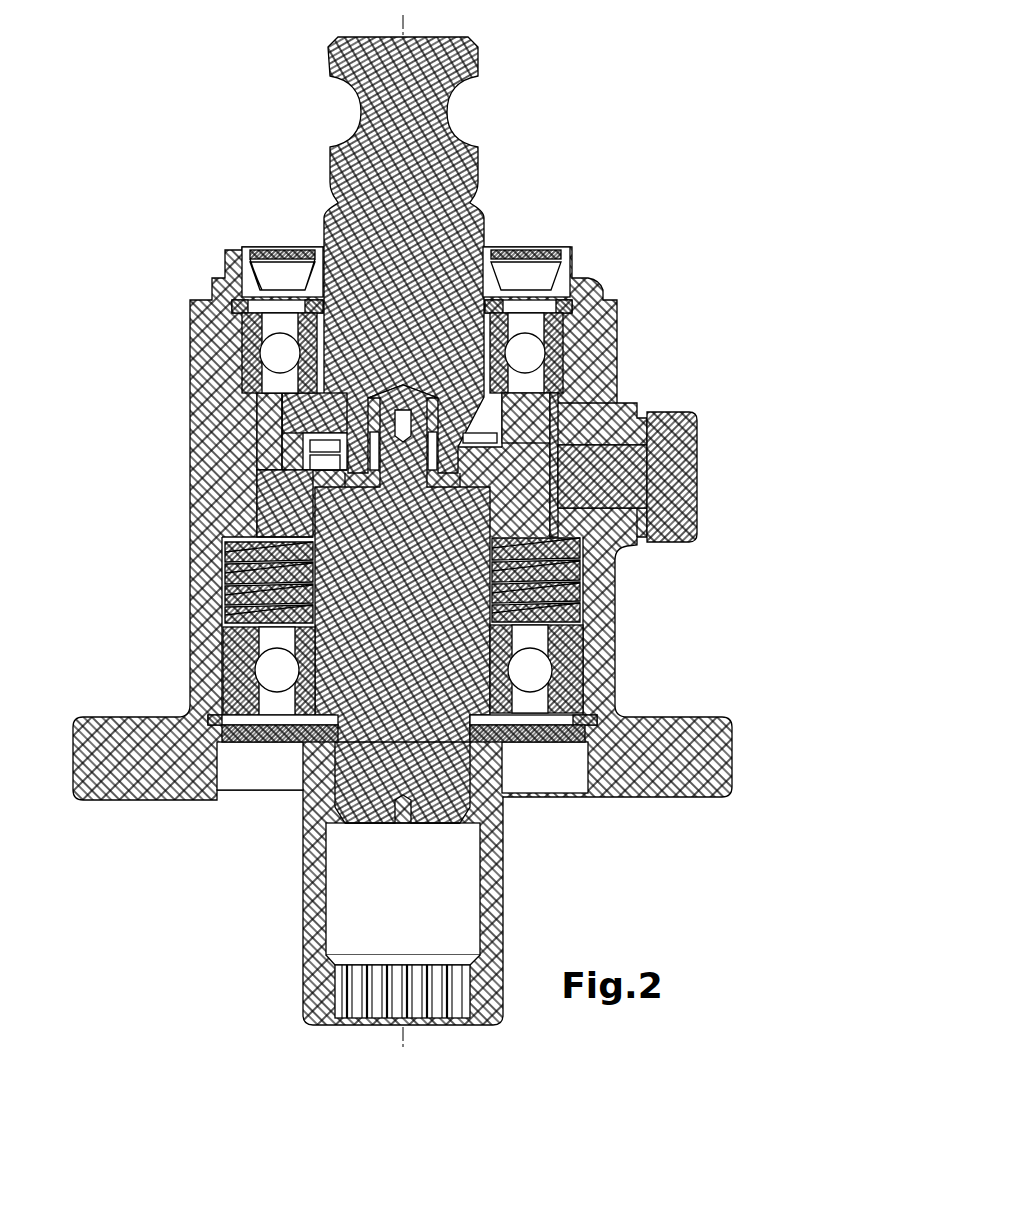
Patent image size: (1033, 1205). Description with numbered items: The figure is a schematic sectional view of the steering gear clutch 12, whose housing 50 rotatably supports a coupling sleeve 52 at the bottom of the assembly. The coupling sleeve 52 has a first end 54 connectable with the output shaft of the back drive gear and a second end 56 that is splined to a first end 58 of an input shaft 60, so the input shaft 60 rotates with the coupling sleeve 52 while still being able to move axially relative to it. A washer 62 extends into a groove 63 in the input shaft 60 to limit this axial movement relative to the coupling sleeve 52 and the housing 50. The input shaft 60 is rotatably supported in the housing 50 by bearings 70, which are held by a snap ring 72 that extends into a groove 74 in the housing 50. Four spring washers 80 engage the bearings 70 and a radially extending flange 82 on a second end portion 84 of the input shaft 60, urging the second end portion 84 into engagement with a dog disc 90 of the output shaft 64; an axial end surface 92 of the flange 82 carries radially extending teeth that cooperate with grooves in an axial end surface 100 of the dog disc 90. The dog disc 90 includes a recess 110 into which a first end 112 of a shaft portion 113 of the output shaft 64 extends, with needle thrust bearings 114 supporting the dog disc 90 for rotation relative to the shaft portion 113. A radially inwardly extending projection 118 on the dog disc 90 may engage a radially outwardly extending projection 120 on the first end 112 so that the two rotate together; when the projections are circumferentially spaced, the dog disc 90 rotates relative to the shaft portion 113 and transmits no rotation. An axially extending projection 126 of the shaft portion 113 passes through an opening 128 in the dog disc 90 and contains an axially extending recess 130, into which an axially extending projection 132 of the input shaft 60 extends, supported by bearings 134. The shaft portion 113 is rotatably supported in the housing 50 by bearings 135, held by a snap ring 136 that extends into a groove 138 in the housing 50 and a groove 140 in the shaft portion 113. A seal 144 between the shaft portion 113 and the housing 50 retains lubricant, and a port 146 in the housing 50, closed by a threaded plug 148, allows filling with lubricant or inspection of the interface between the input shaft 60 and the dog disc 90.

The steering gear clutch 12 is at (660, 108).
The housing 50 is at (594, 328).
The coupling sleeve 52 is at (409, 920).
The first end 54 is at (322, 988).
The second end 56 is at (478, 770).
The first end 58 is at (365, 797).
The input shaft 60 is at (457, 617).
The washer 62 is at (560, 745).
The groove 63 is at (458, 735).
The output shaft 64 is at (455, 65).
The bearings 70 is at (570, 695).
The snap ring 72 is at (590, 727).
The groove 74 is at (215, 718).
The spring washers 80 is at (490, 598).
The flange 82 is at (280, 515).
The second end portion 84 is at (285, 490).
The dog disc 90 is at (270, 450).
The axial end surface 92 is at (598, 418).
The axial end surface 100 is at (671, 477).
The recess 110 is at (290, 415).
The first end 112 is at (548, 470).
The shaft portion 113 is at (452, 237).
The bearings 114 is at (357, 458).
The radially inwardly extending projection 118 is at (512, 405).
The radially outwardly extending projection 120 is at (327, 437).
The axially extending projection 126 is at (347, 460).
The opening 128 is at (360, 440).
The axially extending recess 130 is at (402, 577).
The axially extending projection 132 is at (405, 412).
The bearings 134 is at (420, 440).
The bearings 135 is at (258, 312).
The snap ring 136 is at (570, 300).
The groove 138 is at (262, 268).
The groove 140 is at (318, 305).
The seal 144 is at (540, 252).
The port 146 is at (630, 505).
The plug 148 is at (678, 488).